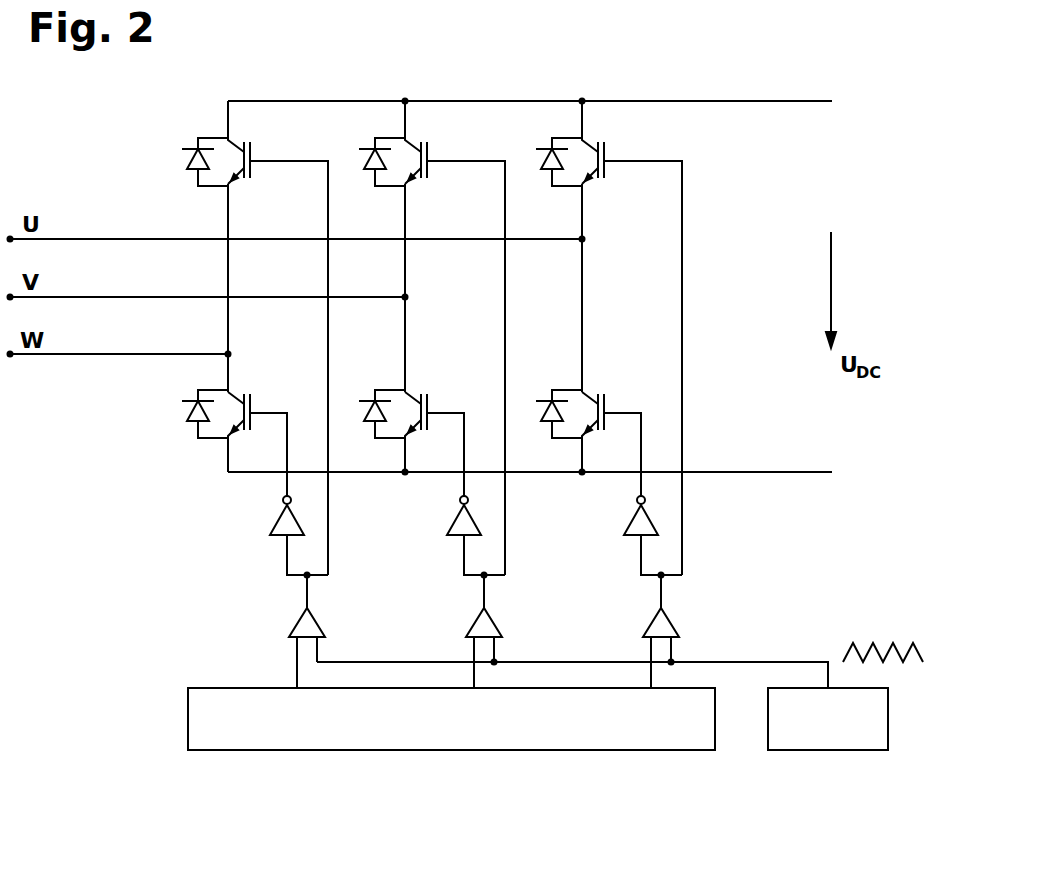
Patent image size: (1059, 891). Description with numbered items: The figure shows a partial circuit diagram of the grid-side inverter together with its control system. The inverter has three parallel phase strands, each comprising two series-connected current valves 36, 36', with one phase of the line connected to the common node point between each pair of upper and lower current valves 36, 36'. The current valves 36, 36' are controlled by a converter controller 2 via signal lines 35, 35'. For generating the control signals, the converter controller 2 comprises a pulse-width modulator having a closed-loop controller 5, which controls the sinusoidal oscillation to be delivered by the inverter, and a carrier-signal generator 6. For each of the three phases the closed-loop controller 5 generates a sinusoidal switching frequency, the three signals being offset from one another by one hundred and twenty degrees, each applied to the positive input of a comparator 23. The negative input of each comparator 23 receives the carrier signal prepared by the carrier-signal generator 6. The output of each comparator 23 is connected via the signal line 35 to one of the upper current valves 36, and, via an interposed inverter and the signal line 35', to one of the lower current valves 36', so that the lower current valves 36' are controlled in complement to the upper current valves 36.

The converter controller 2 is at (158, 680).
The closed-loop controller 5 is at (392, 751).
The carrier-signal generator 6 is at (828, 751).
The comparator 23 is at (300, 624).
The signal line 35 is at (528, 571).
The signal line 35' is at (431, 510).
The upper current valve 36 is at (432, 304).
The lower current valve 36' is at (413, 408).